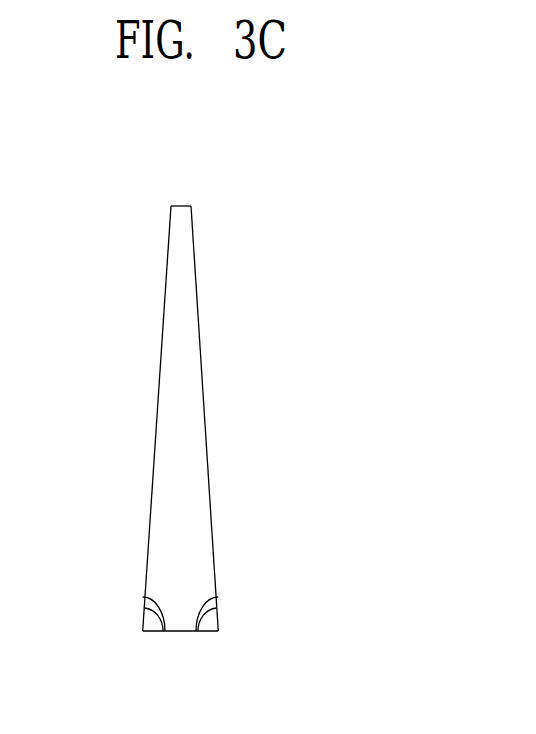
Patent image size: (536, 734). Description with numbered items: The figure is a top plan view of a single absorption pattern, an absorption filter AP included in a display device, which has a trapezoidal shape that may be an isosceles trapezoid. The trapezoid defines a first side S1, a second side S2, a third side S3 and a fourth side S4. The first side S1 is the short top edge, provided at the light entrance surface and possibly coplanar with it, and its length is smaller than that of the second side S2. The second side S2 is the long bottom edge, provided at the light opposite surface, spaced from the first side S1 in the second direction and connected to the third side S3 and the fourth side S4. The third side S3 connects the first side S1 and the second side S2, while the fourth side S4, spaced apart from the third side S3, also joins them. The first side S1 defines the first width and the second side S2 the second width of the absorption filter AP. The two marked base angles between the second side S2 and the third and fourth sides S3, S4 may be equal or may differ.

The absorption filter AP is at (181, 413).
The first side S1 is at (180, 205).
The second side S2 is at (178, 632).
The third side S3 is at (156, 419).
The fourth side S4 is at (204, 419).